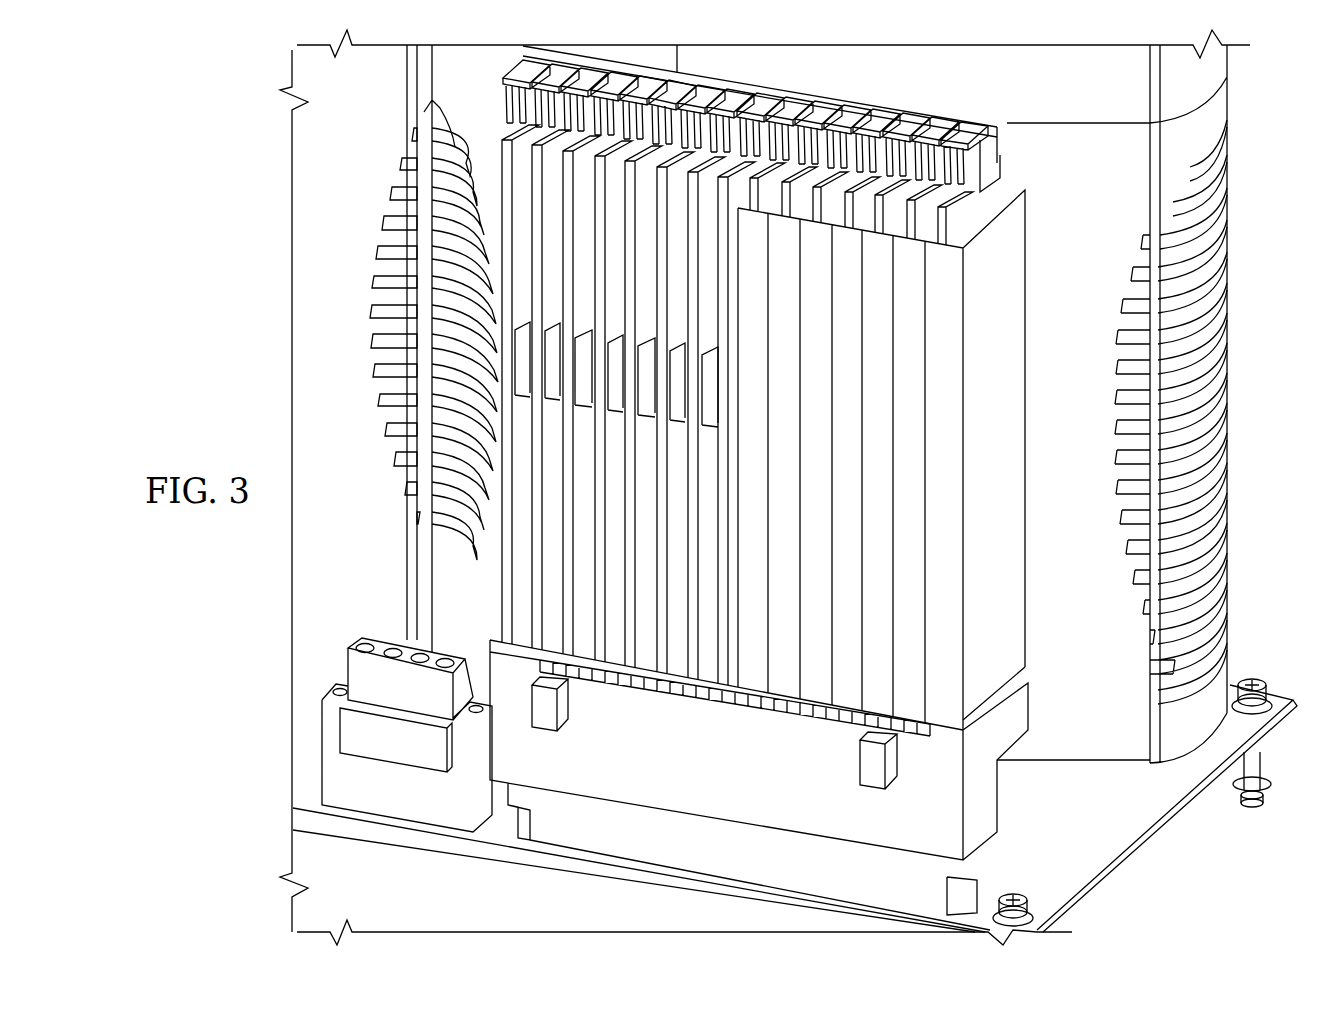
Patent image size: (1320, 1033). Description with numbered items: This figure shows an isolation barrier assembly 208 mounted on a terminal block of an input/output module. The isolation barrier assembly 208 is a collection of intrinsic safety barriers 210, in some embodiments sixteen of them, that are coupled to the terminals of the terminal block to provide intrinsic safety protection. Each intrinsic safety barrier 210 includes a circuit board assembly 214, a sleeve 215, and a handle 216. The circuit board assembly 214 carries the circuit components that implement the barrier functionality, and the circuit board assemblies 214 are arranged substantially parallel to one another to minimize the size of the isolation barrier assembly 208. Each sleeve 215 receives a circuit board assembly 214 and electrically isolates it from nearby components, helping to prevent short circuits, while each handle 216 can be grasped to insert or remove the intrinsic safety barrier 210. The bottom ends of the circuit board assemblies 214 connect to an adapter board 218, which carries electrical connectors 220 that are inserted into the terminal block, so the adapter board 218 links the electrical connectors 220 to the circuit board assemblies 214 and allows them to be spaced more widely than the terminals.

The isolation barrier assembly 208 is at (801, 388).
The intrinsic safety barrier 210 is at (886, 110).
The circuit board assembly 214 is at (957, 227).
The sleeve 215 is at (1002, 372).
The handle 216 is at (997, 141).
The adapter board 218 is at (1002, 716).
The electrical connector 220 is at (643, 682).